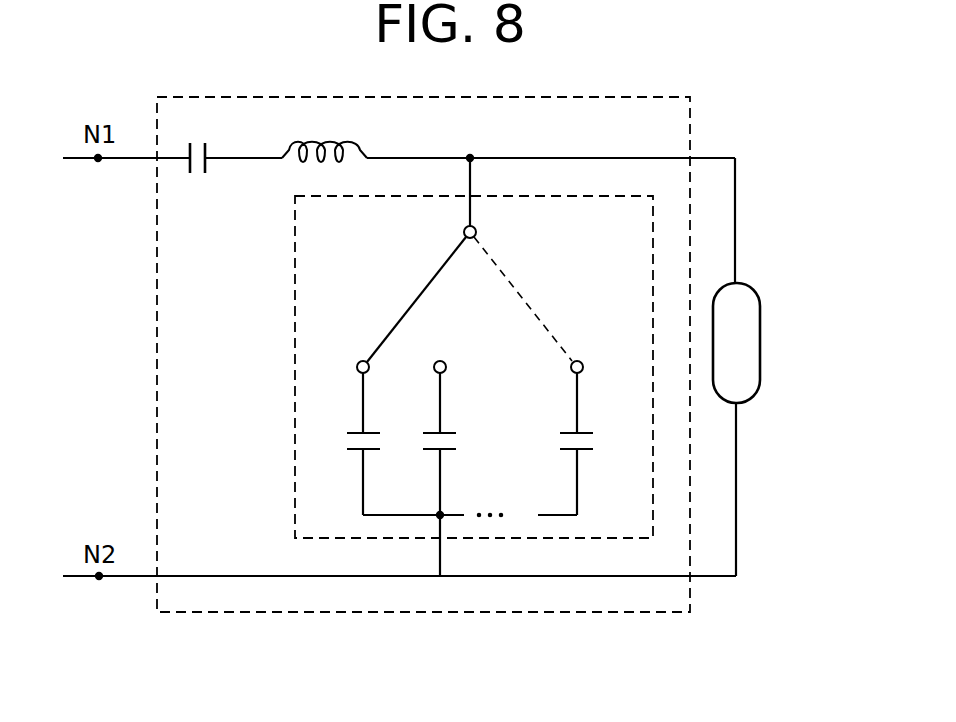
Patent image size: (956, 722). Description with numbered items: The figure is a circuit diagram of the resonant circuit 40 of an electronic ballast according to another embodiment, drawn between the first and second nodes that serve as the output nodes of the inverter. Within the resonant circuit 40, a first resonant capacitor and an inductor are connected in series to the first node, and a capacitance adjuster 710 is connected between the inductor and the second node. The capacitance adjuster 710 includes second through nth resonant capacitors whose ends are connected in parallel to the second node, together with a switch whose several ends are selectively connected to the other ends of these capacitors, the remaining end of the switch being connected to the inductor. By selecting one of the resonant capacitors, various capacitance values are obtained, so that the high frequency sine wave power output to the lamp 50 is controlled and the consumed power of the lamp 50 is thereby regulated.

The resonant circuit 40 is at (690, 120).
The capacitance adjuster 710 is at (653, 203).
The lamp 50 is at (742, 289).